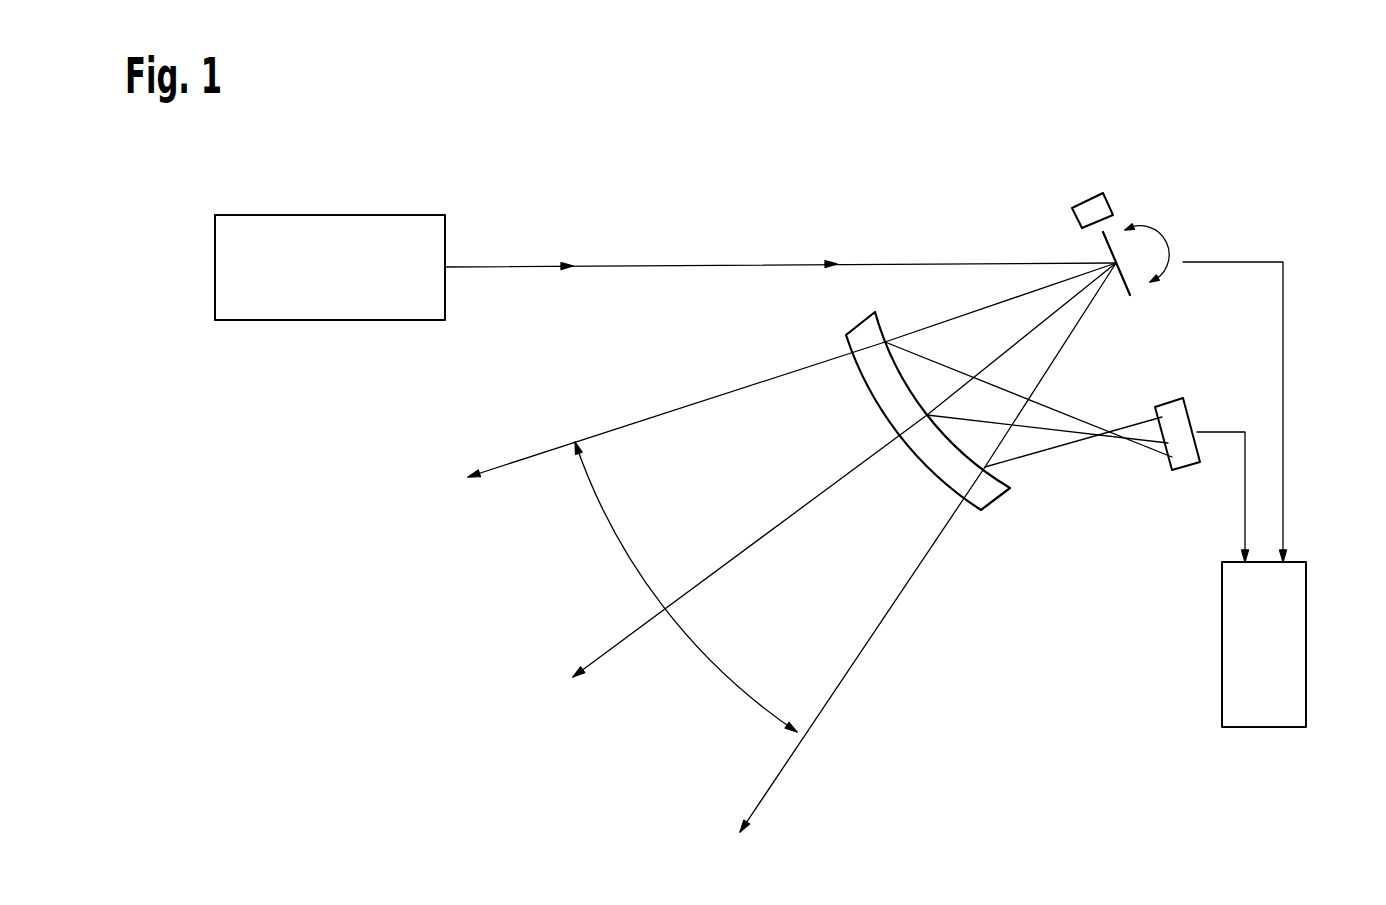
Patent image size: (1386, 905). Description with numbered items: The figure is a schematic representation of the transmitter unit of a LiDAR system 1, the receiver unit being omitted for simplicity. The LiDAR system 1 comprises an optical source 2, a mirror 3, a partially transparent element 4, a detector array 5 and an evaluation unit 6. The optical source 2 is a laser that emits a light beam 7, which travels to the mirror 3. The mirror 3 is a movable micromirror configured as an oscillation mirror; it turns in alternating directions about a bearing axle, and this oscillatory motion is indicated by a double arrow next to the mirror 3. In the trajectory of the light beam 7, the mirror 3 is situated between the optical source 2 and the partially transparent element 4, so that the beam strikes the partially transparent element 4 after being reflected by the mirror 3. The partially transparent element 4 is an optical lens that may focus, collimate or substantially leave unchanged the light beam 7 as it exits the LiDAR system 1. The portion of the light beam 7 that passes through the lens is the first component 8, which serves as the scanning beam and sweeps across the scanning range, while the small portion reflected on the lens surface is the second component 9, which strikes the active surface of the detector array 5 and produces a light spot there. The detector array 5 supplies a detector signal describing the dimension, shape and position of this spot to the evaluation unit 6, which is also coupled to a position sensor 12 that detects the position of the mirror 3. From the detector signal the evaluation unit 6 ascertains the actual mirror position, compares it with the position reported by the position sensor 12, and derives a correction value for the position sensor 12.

The LiDAR system 1 is at (1302, 168).
The optical source 2 is at (330, 215).
The mirror 3 is at (1110, 255).
The partially transparent element 4 is at (990, 510).
The detector array 5 is at (1167, 402).
The evaluation unit 6 is at (1222, 642).
The light beam 7 is at (715, 265).
The first component 8 is at (783, 513).
The second component 9 is at (1065, 410).
The position sensor 12 is at (1082, 205).